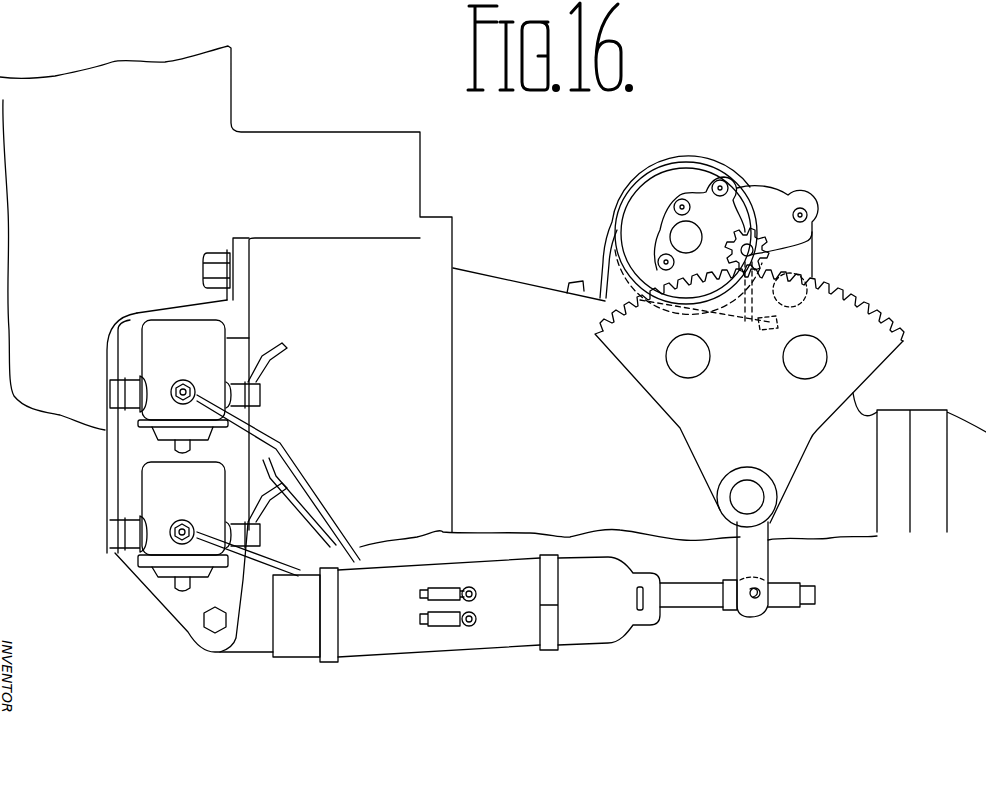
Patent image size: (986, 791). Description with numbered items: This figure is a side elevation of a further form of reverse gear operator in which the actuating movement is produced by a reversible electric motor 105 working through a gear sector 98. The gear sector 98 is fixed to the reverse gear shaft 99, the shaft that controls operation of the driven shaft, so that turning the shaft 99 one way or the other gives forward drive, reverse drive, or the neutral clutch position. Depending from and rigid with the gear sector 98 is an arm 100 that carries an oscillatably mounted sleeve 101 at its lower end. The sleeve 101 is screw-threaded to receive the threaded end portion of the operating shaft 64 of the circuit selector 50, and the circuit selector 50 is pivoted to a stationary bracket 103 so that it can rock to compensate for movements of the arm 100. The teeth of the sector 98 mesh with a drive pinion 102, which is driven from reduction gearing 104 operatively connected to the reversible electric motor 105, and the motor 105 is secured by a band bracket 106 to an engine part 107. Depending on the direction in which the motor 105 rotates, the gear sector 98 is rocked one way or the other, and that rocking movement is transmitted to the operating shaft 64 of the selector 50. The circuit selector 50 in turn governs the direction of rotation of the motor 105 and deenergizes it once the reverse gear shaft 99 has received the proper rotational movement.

The circuit selector 50 is at (599, 634).
The operating shaft 64 is at (700, 596).
The gear sector 98 is at (886, 350).
The reverse gear shaft 99 is at (754, 493).
The arm 100 is at (755, 560).
The sleeve 101 is at (768, 600).
The drive pinion 102 is at (808, 240).
The stationary bracket 103 is at (168, 592).
The reduction gearing 104 is at (782, 210).
The reversible electric motor 105 is at (638, 208).
The band bracket 106 is at (610, 245).
The engine part 107 is at (568, 433).